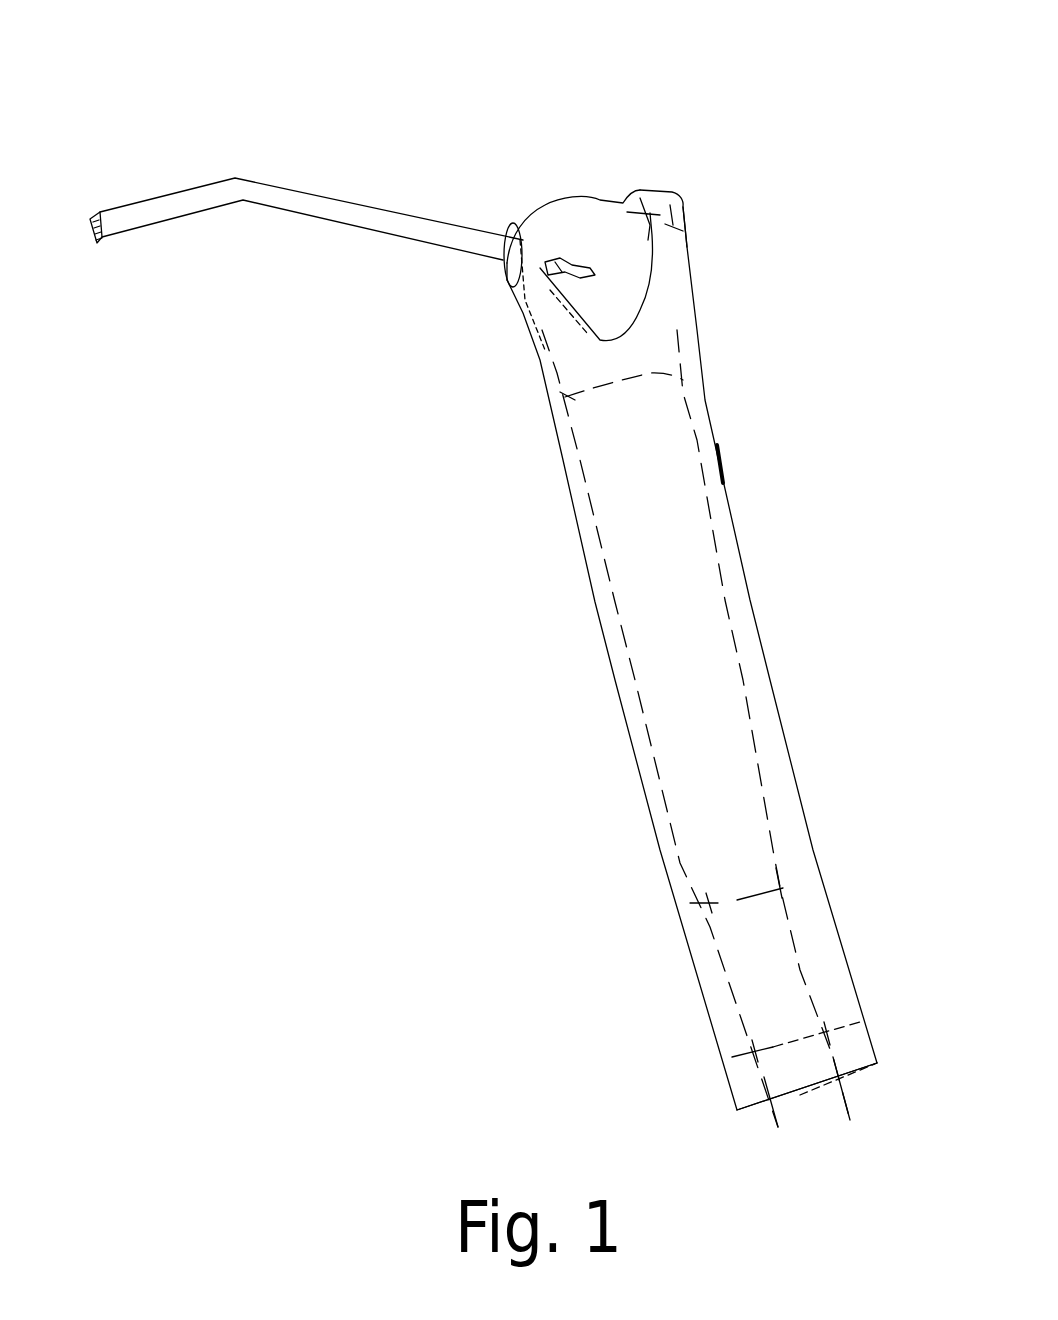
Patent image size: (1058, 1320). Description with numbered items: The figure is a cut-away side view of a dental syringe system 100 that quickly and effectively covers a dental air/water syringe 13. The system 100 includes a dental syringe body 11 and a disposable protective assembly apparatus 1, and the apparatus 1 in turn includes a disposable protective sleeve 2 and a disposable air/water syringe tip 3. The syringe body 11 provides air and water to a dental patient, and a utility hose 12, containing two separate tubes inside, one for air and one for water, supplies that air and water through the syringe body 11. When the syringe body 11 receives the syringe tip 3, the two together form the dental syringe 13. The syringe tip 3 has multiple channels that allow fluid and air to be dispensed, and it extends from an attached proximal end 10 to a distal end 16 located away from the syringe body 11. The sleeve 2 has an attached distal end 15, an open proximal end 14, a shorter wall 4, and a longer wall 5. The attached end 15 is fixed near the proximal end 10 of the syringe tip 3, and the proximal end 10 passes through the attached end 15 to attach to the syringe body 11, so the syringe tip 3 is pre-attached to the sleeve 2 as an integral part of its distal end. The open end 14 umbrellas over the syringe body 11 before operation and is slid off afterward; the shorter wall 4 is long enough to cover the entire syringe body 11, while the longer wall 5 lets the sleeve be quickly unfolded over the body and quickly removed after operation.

The dental syringe system 100 is at (875, 89).
The disposable protective assembly apparatus 1 is at (601, 184).
The dental air/water syringe 13 is at (702, 260).
The attached distal end 15 is at (505, 255).
The proximal end 10 is at (565, 270).
The disposable air/water syringe tip 3 is at (217, 190).
The distal end 16 is at (105, 212).
The dental syringe body 11 is at (618, 602).
The disposable protective sleeve 2 is at (641, 778).
The utility hose 12 is at (752, 965).
The shorter wall 4 is at (803, 1037).
The longer wall 5 is at (800, 1087).
The open proximal end 14 is at (886, 1094).